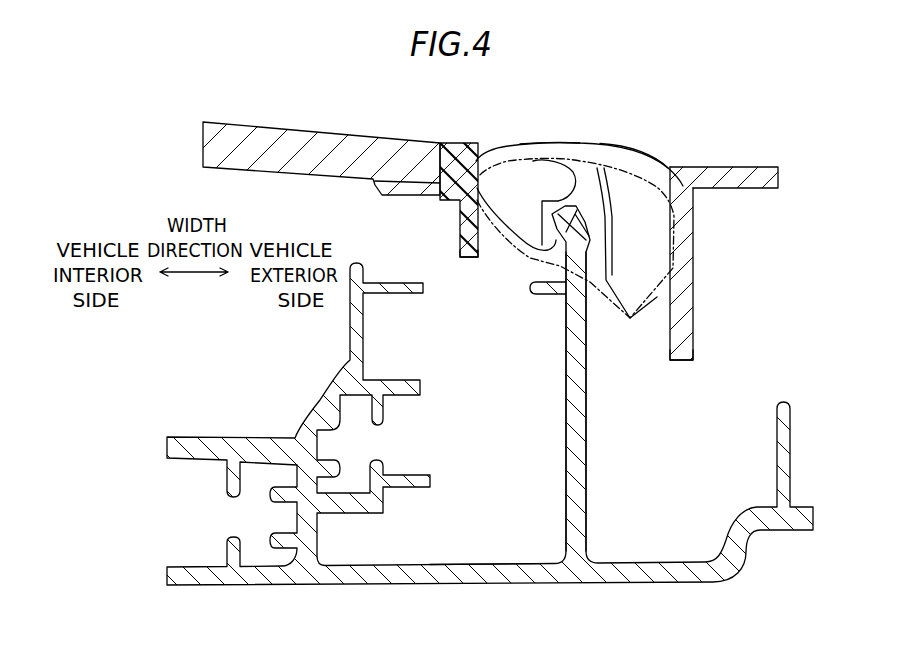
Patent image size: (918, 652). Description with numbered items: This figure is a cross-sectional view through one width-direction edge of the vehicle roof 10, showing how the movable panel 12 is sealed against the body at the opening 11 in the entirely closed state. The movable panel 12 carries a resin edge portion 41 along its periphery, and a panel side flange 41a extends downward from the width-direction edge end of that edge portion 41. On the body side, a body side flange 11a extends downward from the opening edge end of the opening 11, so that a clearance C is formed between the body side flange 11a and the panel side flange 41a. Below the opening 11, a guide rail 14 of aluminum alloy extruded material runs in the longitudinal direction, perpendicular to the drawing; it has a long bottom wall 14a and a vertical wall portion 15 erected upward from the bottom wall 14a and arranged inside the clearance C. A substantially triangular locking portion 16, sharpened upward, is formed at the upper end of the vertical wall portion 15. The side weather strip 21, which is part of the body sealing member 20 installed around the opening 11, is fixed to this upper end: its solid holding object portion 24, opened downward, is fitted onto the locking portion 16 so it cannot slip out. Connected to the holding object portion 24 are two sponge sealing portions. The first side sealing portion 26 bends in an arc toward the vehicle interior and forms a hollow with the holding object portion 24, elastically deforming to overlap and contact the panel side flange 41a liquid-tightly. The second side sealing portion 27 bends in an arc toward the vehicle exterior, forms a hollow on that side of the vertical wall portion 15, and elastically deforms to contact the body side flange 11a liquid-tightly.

The roof 10 is at (750, 166).
The opening 11 is at (678, 162).
The body side flange 11a is at (668, 349).
The movable panel 12 is at (333, 129).
The guide rail 14 is at (652, 562).
The bottom wall 14a is at (480, 562).
The vertical wall portion 15 is at (566, 365).
The locking portion 16 is at (548, 205).
The body sealing member 20 is at (585, 200).
The side weather strip 21 is at (562, 143).
The holding object portion 24 is at (617, 237).
The first side sealing portion 26 is at (506, 146).
The second side sealing portion 27 is at (622, 148).
The edge portion 41 is at (463, 142).
The panel side flange 41a is at (486, 258).
The clearance C is at (540, 143).